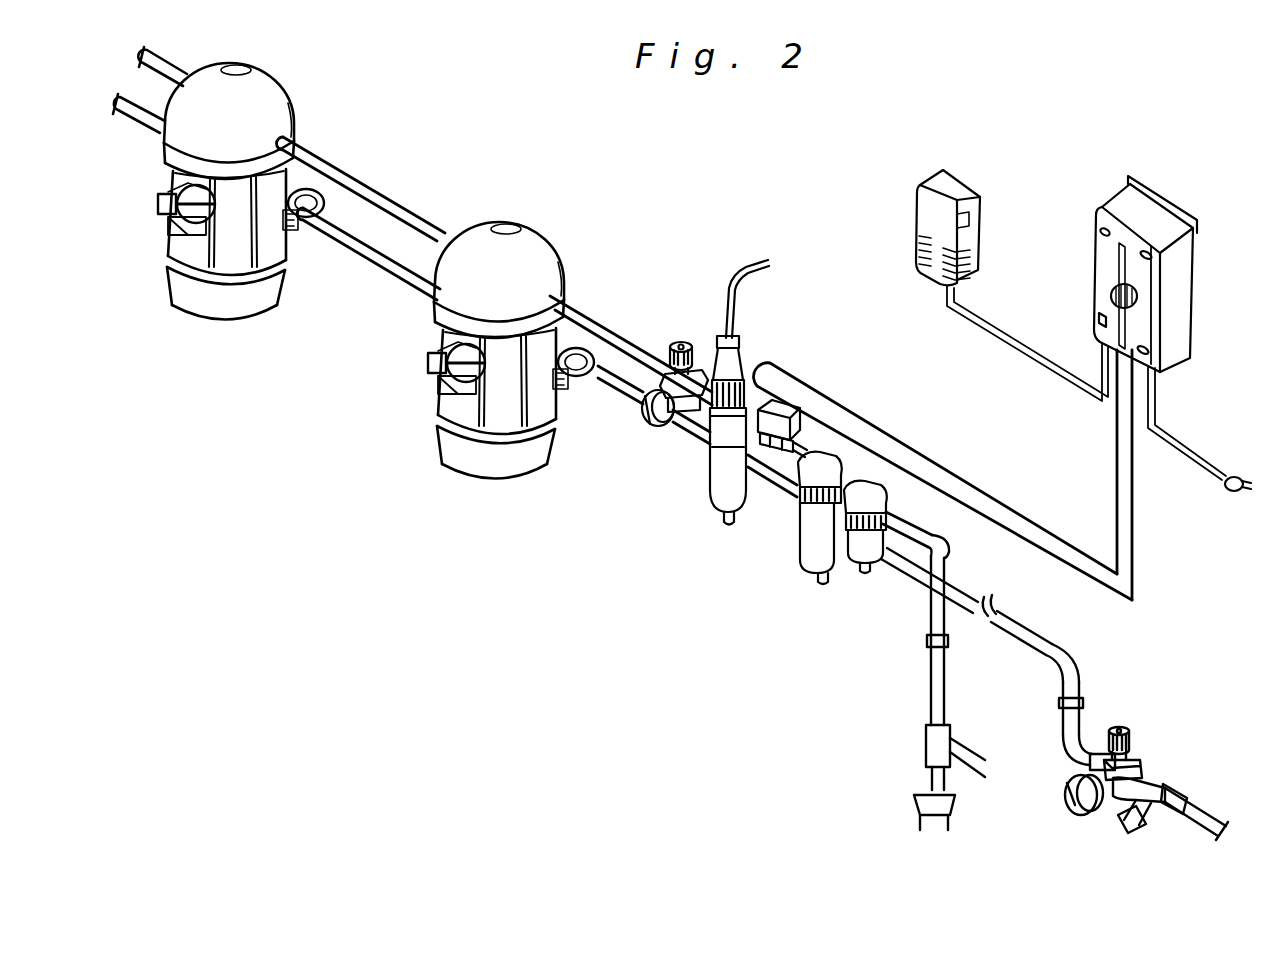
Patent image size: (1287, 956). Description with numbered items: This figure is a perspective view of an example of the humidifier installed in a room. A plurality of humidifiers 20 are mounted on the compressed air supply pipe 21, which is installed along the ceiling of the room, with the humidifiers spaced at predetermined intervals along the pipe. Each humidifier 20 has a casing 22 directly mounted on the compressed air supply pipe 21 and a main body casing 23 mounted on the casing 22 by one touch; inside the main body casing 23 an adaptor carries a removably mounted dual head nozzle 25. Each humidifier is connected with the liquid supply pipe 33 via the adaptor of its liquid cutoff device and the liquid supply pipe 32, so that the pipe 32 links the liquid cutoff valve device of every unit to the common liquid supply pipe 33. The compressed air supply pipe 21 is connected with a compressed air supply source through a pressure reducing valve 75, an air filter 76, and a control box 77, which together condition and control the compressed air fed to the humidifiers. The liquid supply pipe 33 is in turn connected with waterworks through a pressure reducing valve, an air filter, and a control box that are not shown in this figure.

The humidifier 20 is at (375, 271).
The compressed air supply pipe 21 is at (413, 210).
The casing 22 is at (255, 103).
The main body casing 23 is at (258, 230).
The dual head nozzle 25 is at (198, 224).
The liquid supply pipe 32 is at (342, 173).
The liquid supply pipe 33 is at (403, 272).
The pressure reducing valve 75 is at (682, 336).
The air filter 76 is at (720, 474).
The control box 77 is at (1103, 274).